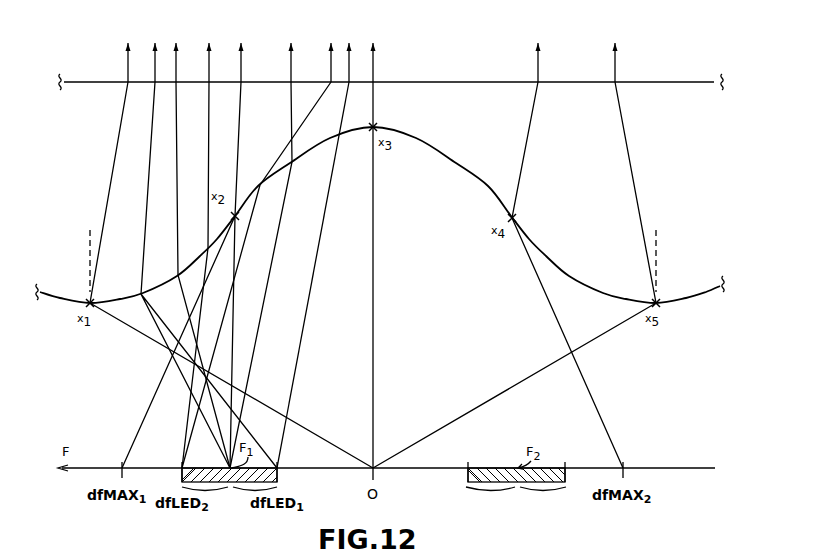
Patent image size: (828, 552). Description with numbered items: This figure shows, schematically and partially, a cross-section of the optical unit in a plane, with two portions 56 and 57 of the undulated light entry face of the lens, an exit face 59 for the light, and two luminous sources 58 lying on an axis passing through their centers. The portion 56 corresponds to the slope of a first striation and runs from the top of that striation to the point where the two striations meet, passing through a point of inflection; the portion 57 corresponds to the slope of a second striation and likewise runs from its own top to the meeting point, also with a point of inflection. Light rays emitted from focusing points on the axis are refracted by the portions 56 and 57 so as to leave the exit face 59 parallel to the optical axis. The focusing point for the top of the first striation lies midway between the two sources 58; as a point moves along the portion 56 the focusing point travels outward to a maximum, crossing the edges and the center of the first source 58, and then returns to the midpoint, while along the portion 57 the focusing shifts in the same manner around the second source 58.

The portion of the undulated light entry face 56 is at (125, 301).
The portion of the undulated light entry face 57 is at (612, 297).
The luminous source 58 is at (232, 494).
The exit face 59 is at (419, 82).